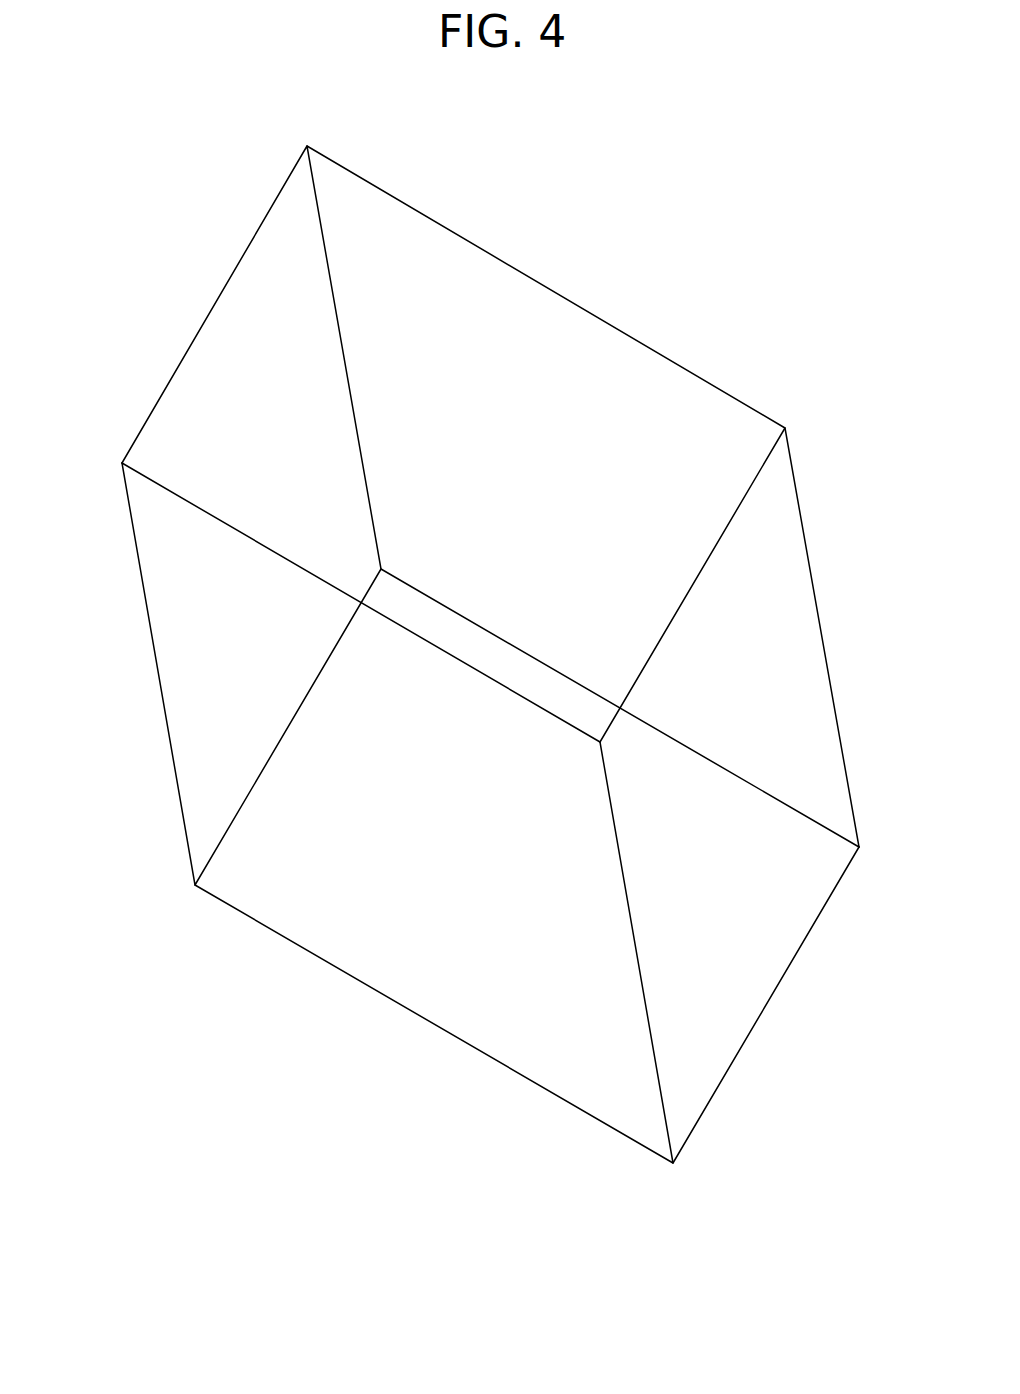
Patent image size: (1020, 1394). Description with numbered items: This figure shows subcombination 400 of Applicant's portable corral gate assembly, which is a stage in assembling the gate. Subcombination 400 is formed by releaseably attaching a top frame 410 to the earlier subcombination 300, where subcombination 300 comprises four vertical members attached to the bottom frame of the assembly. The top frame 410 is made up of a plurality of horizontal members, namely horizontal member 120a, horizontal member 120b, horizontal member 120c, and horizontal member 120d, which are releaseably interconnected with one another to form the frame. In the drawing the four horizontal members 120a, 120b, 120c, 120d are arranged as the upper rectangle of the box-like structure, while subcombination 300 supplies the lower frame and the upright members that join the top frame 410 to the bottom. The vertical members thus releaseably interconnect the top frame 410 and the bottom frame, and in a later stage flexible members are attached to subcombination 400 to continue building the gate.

The horizontal member 120a is at (685, 604).
The horizontal member 120b is at (550, 287).
The horizontal member 120c is at (218, 298).
The horizontal member 120d is at (440, 651).
The subcombination 300 is at (434, 1024).
The subcombination 400 is at (455, 1193).
The top frame 410 is at (632, 338).